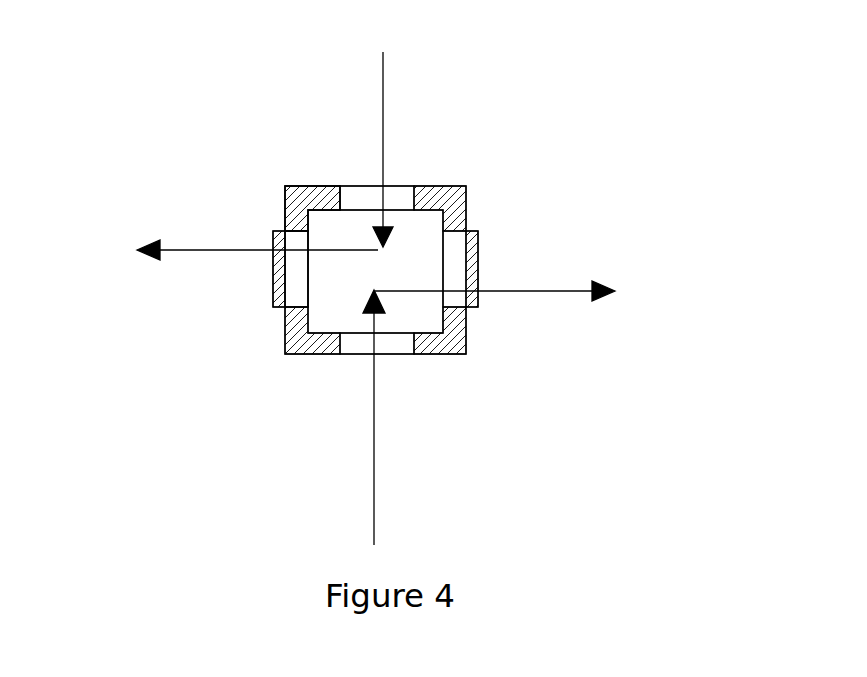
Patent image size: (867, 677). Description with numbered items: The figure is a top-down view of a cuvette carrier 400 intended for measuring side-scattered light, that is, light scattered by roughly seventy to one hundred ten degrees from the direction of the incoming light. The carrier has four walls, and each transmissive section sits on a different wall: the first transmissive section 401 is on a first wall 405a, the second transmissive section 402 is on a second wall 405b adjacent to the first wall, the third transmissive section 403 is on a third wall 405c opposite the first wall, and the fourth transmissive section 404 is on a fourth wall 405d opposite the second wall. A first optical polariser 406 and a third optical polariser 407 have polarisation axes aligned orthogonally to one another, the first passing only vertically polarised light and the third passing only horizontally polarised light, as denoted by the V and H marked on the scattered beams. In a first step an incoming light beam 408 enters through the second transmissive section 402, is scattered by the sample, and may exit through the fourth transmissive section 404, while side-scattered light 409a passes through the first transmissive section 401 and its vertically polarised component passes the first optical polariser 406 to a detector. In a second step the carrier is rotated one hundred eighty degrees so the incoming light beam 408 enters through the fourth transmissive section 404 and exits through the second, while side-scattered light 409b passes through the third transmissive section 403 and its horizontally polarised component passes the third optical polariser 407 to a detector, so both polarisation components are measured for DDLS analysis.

The cuvette carrier 400 is at (130, 135).
The first transmissive section 401 is at (467, 347).
The second transmissive section 402 is at (403, 355).
The third transmissive section 403 is at (297, 300).
The fourth transmissive section 404 is at (398, 195).
The first wall 405a is at (467, 207).
The second wall 405b is at (315, 355).
The third wall 405c is at (283, 197).
The fourth wall 405d is at (303, 185).
The first optical polariser 406 is at (480, 305).
The third optical polariser 407 is at (275, 303).
The incoming light beam 408 is at (383, 63).
The side-scattered light 409a is at (577, 290).
The side-scattered light 409b is at (193, 250).